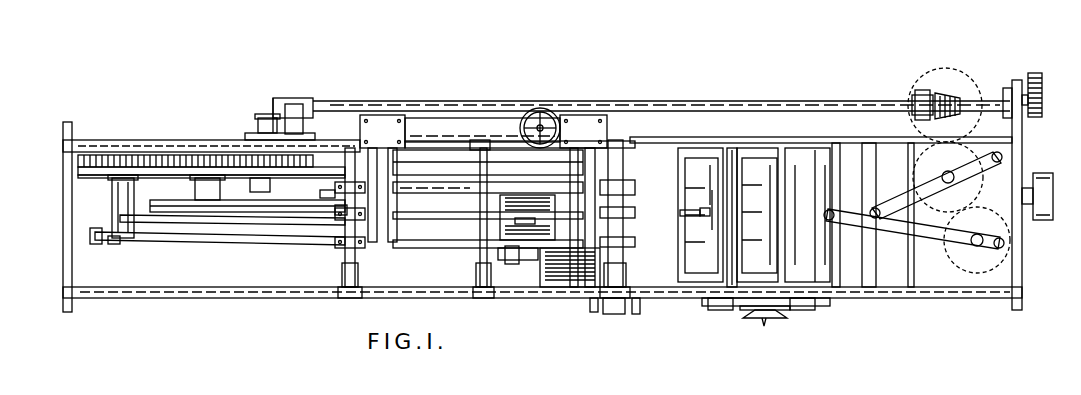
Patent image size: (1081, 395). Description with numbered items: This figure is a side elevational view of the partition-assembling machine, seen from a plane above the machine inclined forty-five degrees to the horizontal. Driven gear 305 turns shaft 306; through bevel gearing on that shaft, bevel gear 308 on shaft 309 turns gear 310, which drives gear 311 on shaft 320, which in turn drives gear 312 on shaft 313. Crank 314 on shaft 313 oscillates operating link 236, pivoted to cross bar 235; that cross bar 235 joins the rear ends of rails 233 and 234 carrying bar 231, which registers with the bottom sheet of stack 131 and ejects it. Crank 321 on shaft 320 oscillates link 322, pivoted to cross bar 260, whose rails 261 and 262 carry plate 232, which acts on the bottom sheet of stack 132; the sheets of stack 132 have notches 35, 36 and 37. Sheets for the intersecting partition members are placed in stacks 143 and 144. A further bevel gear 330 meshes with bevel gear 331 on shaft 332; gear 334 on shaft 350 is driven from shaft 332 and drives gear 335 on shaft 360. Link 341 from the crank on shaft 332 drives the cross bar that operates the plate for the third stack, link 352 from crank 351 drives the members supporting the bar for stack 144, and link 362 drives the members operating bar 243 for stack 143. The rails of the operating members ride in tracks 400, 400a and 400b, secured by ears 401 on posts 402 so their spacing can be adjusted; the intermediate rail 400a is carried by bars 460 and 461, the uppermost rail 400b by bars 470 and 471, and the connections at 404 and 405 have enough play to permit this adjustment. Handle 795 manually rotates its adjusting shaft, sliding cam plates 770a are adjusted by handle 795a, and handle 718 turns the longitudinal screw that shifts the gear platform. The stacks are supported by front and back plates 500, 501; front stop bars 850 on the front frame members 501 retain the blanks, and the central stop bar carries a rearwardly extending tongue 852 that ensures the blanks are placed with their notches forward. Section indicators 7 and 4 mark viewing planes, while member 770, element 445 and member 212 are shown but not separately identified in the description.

The shaft 306 is at (497, 92).
The bevel gear 330 is at (290, 98).
The bevel gear 331 is at (262, 118).
The gear 334 is at (172, 162).
The shaft 332 is at (212, 164).
The gear 335 is at (100, 165).
The shaft 360 is at (118, 168).
The shaft 350 is at (212, 165).
The crank 351 is at (247, 203).
The bar 243 is at (330, 192).
The link 341 is at (247, 207).
The link 352 is at (232, 223).
The link 362 is at (210, 240).
The connection 405 is at (118, 212).
The connection 404 is at (336, 208).
The post 402 is at (345, 268).
The mounting ear 401 is at (100, 228).
The bar 471 is at (372, 148).
The rail 770 is at (423, 125).
The handle 795 is at (548, 112).
The bar 470 is at (572, 158).
The bar 460 is at (612, 158).
The bar 461 is at (395, 158).
The track 400 is at (420, 189).
The intermediate rail member 400a is at (460, 219).
The uppermost rail member 400b is at (432, 248).
The motor 445 is at (530, 222).
The back plate 500 is at (549, 267).
The front plate 501 is at (520, 250).
The stack 144 is at (565, 285).
The stack 143 is at (614, 310).
The stack 131 is at (699, 150).
The bar 231 is at (735, 150).
The stack 132 is at (768, 150).
The notch 37 is at (755, 171).
The notch 36 is at (755, 221).
The notch 35 is at (755, 250).
The tongue 852 is at (700, 201).
The front stop bar 850 is at (683, 213).
The cross bar 235 is at (807, 215).
The rail 233 is at (836, 146).
The plate 232 is at (833, 215).
The rail 234 is at (820, 282).
The rail 262 is at (876, 146).
The crank 321 is at (948, 177).
The shaft 320 is at (892, 159).
The link 322 is at (915, 185).
The operating link 236 is at (960, 250).
The cross bar 260 is at (912, 235).
The rail 261 is at (892, 274).
The shaft 313 is at (940, 275).
The crank 314 is at (990, 256).
The gear 312 is at (1000, 272).
The bearing 212 is at (920, 90).
The bevel gear 308 is at (952, 96).
The gear 310 is at (948, 70).
The shaft 309 is at (1000, 88).
The driven gear 305 is at (1038, 73).
The gear 311 is at (1014, 180).
The handle 718 is at (1048, 234).
The sliding cam plate 770a is at (818, 304).
The handle 795a is at (766, 318).
The section line 7 is at (658, 222).
The section line 4 is at (910, 342).